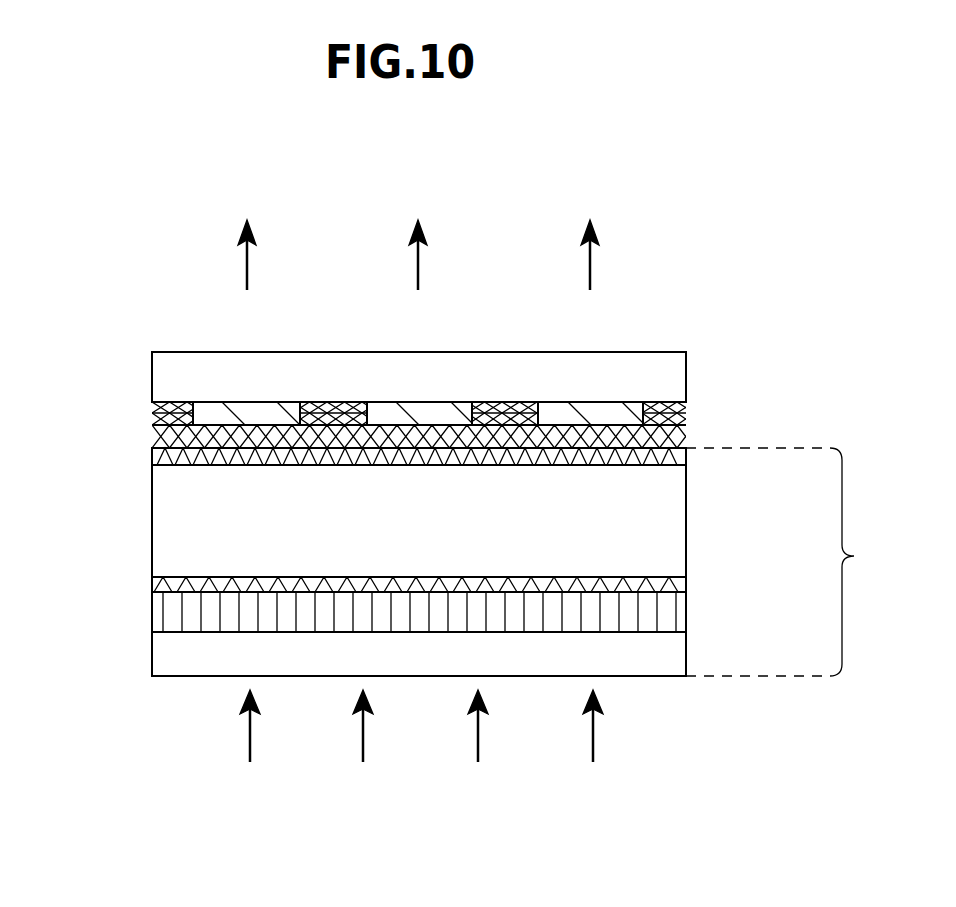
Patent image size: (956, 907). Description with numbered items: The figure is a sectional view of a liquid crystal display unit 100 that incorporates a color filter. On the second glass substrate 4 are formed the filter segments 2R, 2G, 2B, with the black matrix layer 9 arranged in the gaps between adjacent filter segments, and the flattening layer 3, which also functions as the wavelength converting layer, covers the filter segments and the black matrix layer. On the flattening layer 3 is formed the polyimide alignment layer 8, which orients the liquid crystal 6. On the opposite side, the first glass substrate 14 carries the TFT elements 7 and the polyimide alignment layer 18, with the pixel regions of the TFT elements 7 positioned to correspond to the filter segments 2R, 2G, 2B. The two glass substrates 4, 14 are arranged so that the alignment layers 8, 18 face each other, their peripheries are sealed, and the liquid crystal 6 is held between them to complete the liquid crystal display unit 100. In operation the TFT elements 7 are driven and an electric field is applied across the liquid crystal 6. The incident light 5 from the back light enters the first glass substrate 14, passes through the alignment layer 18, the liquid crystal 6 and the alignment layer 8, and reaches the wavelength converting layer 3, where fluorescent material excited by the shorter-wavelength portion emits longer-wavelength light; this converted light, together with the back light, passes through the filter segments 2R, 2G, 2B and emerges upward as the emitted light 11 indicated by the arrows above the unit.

The second glass substrate 4 is at (175, 383).
The black matrix layer 9 is at (668, 405).
The flattening layer 3 is at (675, 423).
The filter segment 2G is at (252, 412).
The filter segment 2R is at (413, 412).
The filter segment 2B is at (590, 411).
The polyimide alignment layer 8 is at (175, 454).
The liquid crystal 6 is at (667, 513).
The polyimide alignment layer 18 is at (175, 580).
The TFT elements 7 is at (667, 610).
The first glass substrate 14 is at (175, 655).
The liquid crystal display unit 100 is at (796, 562).
The emitted light 11 is at (418, 227).
The incident light 5 is at (421, 753).